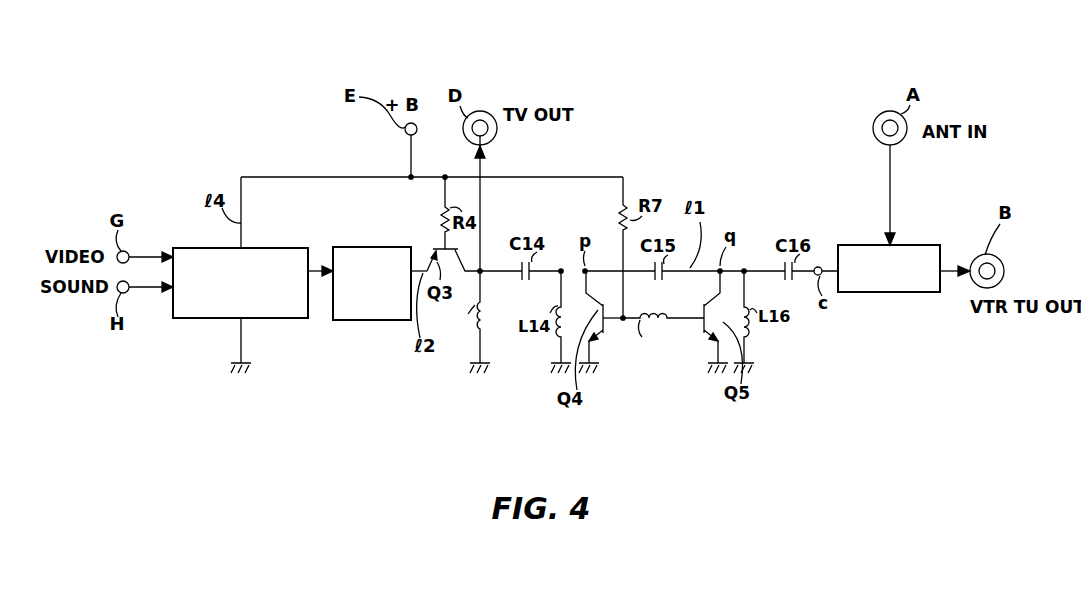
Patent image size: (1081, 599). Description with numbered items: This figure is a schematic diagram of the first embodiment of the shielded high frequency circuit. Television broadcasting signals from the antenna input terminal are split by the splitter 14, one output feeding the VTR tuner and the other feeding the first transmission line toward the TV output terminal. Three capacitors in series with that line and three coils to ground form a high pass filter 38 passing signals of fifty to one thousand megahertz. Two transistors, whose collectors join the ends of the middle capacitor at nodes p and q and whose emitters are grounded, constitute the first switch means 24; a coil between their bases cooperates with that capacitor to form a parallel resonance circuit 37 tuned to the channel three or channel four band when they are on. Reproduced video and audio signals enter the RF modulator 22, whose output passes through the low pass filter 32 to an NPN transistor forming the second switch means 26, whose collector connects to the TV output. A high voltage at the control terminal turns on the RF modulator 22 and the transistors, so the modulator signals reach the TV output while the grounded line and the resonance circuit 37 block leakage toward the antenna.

The splitter 14 is at (870, 292).
The RF modulator 22 is at (173, 320).
The first switch means 24 is at (607, 330).
The second switch means 26 is at (434, 248).
The low pass filter 32 is at (350, 320).
The parallel resonance circuit 37 is at (673, 300).
The high pass filter 38 is at (511, 345).